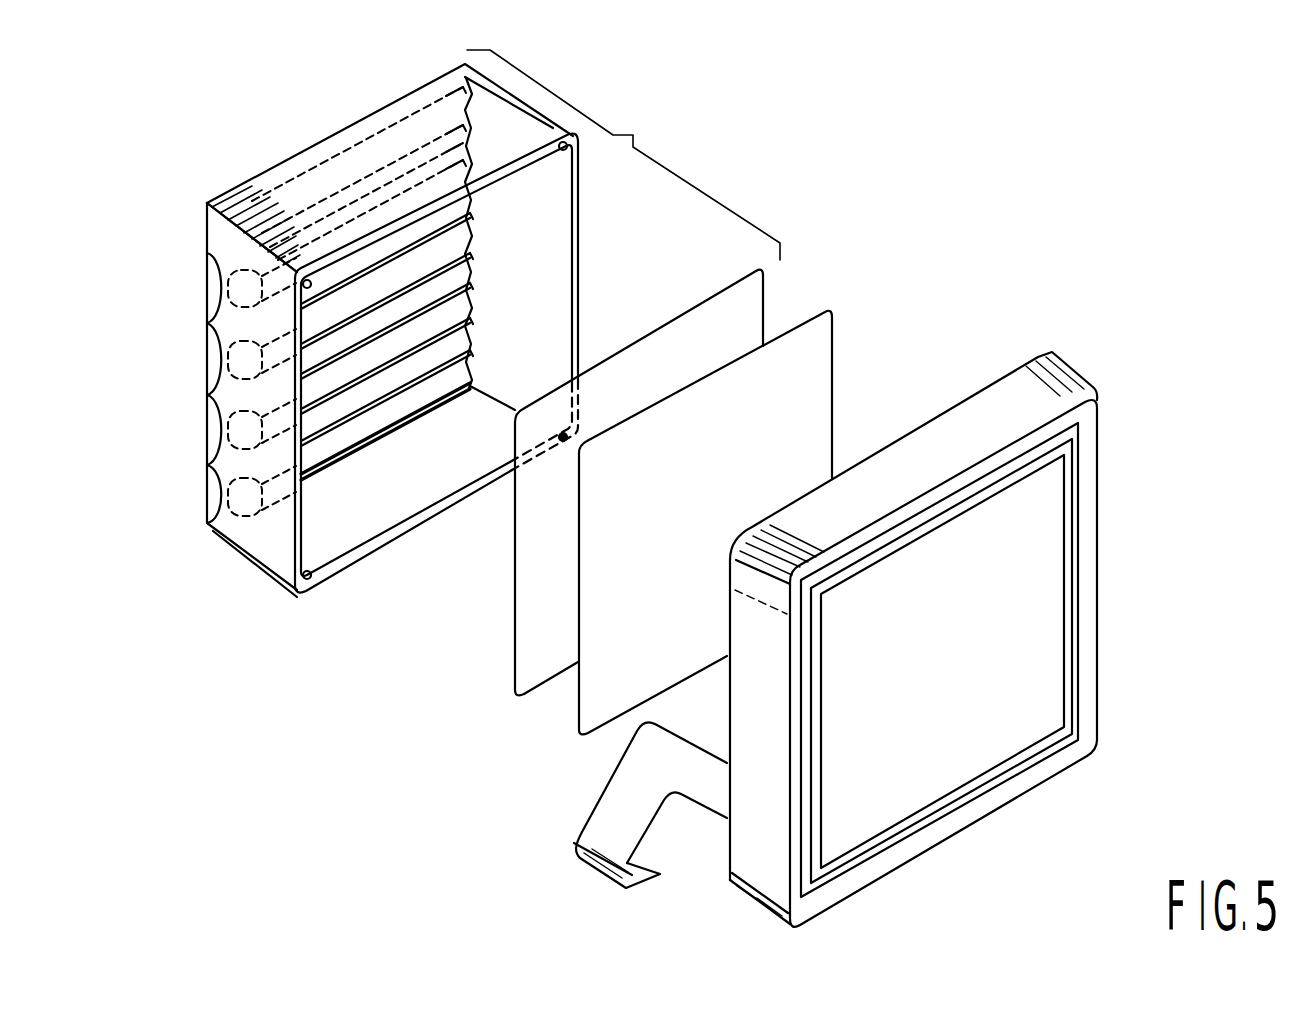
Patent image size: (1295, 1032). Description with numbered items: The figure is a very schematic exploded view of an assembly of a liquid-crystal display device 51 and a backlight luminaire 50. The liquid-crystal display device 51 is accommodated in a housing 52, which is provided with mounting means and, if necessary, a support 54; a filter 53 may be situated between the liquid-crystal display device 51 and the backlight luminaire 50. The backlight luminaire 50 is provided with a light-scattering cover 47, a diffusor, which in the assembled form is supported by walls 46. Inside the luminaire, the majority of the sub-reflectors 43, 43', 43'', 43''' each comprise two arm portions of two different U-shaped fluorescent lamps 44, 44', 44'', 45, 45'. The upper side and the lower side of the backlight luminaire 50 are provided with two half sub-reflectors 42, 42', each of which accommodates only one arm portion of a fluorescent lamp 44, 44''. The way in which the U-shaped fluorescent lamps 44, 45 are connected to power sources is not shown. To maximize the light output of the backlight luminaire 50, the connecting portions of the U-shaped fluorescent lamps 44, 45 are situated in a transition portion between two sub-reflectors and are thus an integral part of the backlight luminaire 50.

The half sub-reflector 42 is at (211, 551).
The half sub-reflector 42' is at (211, 224).
The sub-reflector 43 is at (173, 494).
The sub-reflector 43' is at (173, 430).
The sub-reflector 43'' is at (173, 352).
The sub-reflector 43''' is at (173, 275).
The U-shaped fluorescent lamp 44 is at (255, 537).
The U-shaped fluorescent lamp 44' is at (210, 361).
The U-shaped fluorescent lamp 44'' is at (339, 175).
The U-shaped fluorescent lamp 45 is at (210, 436).
The U-shaped fluorescent lamp 45' is at (210, 282).
The walls 46 is at (549, 263).
The light-scattering cover 47 is at (752, 300).
The backlight luminaire 50 is at (701, 134).
The liquid-crystal display device 51 is at (985, 745).
The housing 52 is at (1000, 400).
The filter 53 is at (817, 353).
The support 54 is at (613, 808).